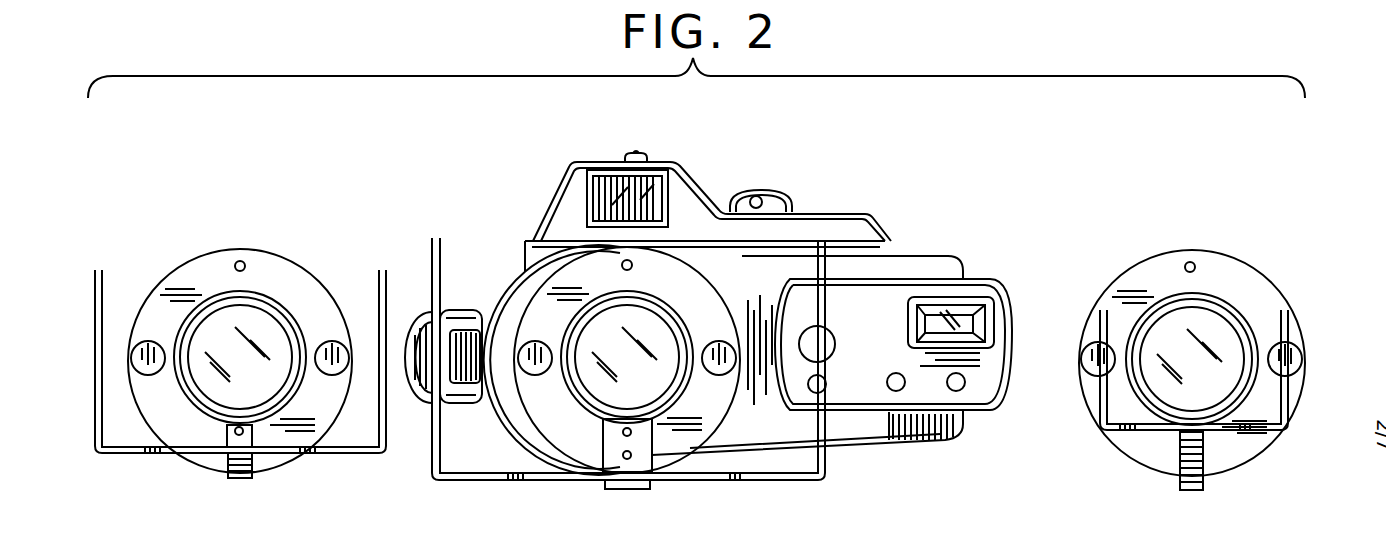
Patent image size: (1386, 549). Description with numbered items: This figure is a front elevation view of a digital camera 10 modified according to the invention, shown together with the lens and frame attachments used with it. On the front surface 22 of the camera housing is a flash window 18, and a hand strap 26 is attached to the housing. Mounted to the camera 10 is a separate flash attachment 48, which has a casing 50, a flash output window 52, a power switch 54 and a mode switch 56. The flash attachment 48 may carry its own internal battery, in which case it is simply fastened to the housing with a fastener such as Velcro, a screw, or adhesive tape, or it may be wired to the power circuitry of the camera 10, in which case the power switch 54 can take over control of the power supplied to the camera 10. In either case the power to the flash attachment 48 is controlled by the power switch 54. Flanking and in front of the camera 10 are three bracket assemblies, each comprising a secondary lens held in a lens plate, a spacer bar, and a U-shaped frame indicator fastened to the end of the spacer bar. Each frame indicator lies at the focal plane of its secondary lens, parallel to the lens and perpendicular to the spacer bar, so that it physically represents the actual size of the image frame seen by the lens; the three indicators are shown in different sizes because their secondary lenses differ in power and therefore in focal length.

The camera 10 is at (975, 261).
The flash window 18 is at (977, 320).
The front surface 22 is at (921, 426).
The hand strap 26 is at (455, 313).
The flash attachment 48 is at (706, 170).
The casing 50 is at (865, 230).
The flash output window 52 is at (612, 203).
The power switch 54 is at (775, 206).
The mode switch 56 is at (635, 154).